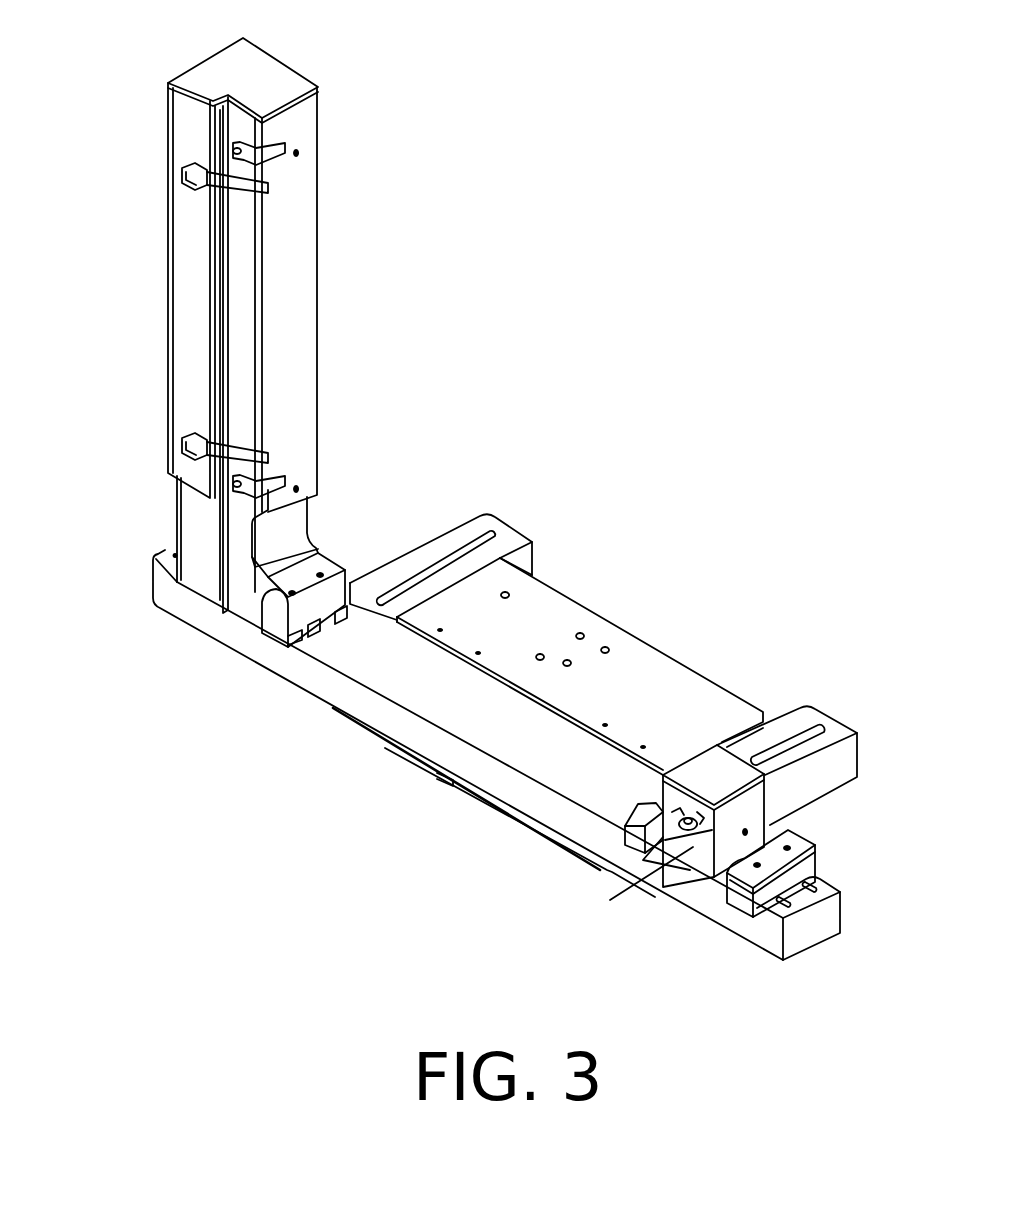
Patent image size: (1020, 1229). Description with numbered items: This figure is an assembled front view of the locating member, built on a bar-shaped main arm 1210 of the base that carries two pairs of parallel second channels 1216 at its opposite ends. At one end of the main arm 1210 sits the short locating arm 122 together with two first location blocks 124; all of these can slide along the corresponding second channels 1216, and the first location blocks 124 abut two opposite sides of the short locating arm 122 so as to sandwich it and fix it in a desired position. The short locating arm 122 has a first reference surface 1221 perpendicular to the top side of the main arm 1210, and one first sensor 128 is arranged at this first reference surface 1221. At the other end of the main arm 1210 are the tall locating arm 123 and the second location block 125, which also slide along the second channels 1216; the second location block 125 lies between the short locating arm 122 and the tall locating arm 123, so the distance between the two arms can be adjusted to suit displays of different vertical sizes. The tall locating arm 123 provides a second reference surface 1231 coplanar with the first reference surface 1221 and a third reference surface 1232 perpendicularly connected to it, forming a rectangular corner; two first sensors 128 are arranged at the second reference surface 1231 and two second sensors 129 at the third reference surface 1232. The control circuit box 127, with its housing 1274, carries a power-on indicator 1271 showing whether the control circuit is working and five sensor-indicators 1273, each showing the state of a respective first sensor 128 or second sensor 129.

The tall locating arm 123 is at (258, 80).
The first sensor 128 is at (233, 151).
The second sensor 129 is at (183, 177).
The third reference surface 1232 is at (227, 267).
The second reference surface 1231 is at (238, 266).
The power-on indicator 1271 is at (507, 590).
The control circuit box 127 is at (583, 583).
The sensor-indicator 1273 is at (608, 645).
The housing 1274 is at (725, 705).
The second location block 125 is at (273, 627).
The second channel 1216 is at (310, 637).
The main arm 1210 is at (463, 715).
The short locating arm 122 is at (740, 808).
The first reference surface 1221 is at (700, 842).
The first location block 124 is at (737, 902).